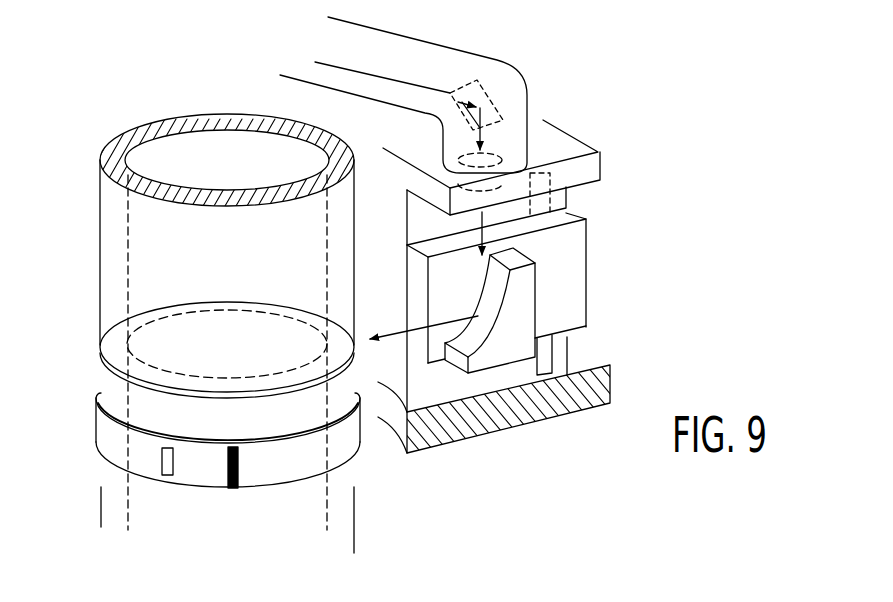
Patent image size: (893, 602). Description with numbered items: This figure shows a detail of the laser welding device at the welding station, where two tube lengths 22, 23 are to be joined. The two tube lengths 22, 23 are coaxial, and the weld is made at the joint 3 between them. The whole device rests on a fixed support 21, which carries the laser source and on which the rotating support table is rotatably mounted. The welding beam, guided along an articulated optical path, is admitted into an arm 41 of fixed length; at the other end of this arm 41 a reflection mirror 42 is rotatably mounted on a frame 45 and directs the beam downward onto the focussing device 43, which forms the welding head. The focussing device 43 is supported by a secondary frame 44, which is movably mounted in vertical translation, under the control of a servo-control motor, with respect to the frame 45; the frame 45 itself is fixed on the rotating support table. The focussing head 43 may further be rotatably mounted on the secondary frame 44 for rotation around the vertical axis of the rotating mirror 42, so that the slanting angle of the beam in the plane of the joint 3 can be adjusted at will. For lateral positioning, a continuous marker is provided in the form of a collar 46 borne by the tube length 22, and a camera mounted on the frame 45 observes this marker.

The joint 3 is at (92, 350).
The fixed support 21 is at (418, 445).
The tube length 22 is at (113, 488).
The tube length 23 is at (134, 131).
The arm 41 is at (337, 87).
The reflection mirror 42 is at (495, 107).
The focussing device 43 is at (517, 298).
The secondary frame 44 is at (572, 240).
The frame 45 is at (567, 195).
The collar 46 is at (104, 458).